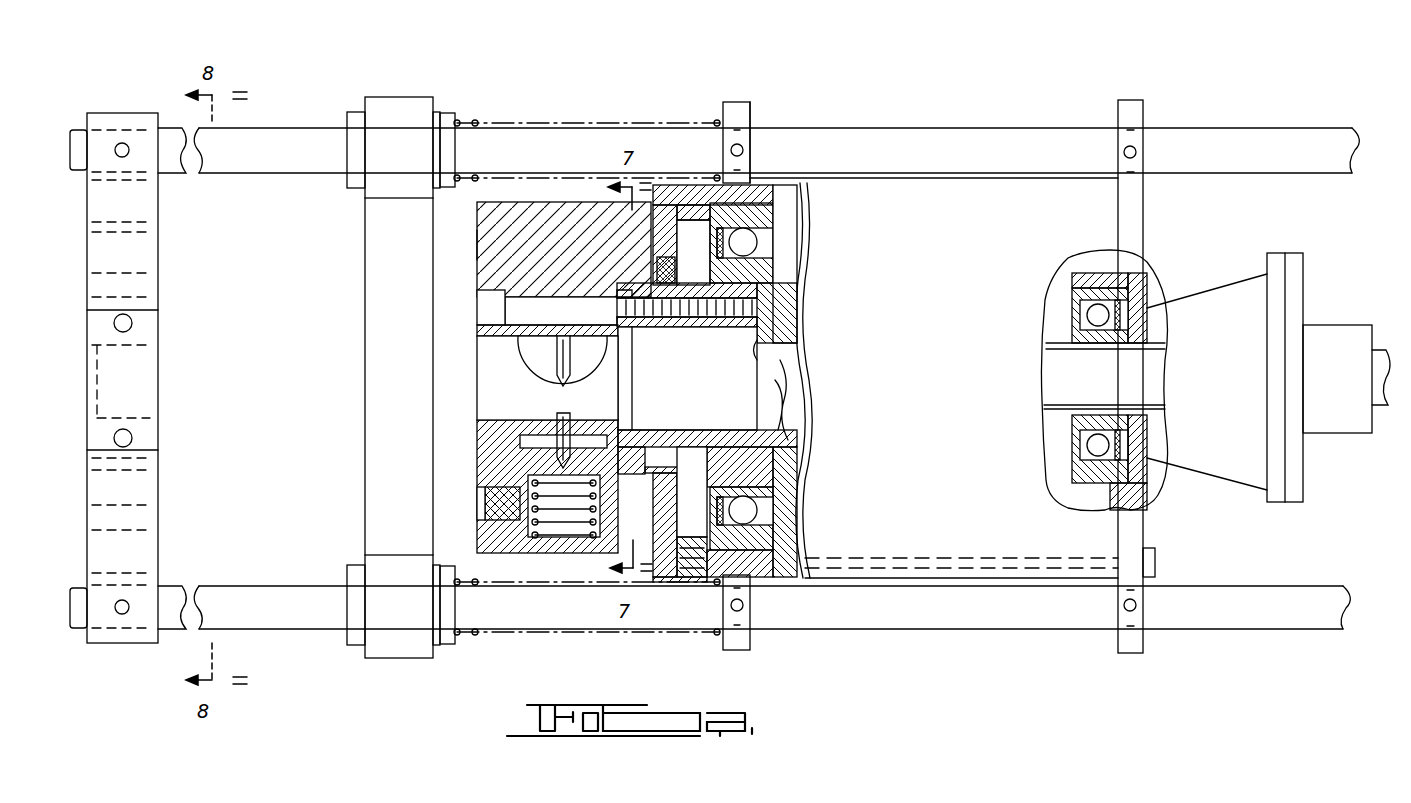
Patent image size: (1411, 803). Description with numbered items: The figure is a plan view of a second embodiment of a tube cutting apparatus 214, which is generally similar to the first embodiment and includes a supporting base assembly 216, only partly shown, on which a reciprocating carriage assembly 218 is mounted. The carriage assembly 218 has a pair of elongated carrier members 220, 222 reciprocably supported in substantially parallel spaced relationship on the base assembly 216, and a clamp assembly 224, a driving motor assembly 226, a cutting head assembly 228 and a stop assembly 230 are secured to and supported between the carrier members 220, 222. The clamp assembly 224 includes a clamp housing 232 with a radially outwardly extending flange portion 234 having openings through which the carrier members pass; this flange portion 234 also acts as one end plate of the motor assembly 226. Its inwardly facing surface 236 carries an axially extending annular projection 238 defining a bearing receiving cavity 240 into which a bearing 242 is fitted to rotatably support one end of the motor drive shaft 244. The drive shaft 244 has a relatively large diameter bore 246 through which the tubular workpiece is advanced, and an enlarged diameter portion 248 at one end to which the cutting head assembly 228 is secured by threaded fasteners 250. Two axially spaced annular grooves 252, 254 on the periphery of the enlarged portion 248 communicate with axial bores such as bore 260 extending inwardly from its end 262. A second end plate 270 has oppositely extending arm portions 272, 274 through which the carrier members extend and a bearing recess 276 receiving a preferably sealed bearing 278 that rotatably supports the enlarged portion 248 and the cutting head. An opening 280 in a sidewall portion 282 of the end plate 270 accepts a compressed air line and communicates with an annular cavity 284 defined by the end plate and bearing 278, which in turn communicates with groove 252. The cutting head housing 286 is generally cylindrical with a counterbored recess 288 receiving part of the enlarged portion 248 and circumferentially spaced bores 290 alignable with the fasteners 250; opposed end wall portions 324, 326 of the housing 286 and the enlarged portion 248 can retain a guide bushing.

The tube cutting apparatus 214 is at (1035, 92).
The supporting base assembly 216 is at (405, 97).
The reciprocating carriage assembly 218 is at (680, 120).
The carrier member 220 is at (912, 135).
The carrier member 222 is at (950, 620).
The clamp assembly 224 is at (1305, 285).
The driving motor assembly 226 is at (878, 279).
The cutting head assembly 228 is at (540, 202).
The stop assembly 230 is at (165, 246).
The clamp housing 232 is at (1198, 297).
The flange portion 234 is at (1146, 212).
The inwardly facing surface 236 is at (1106, 500).
The annular projection 238 is at (1078, 480).
The bearing receiving cavity 240 is at (1086, 292).
The bearing 242 is at (1082, 318).
The motor drive shaft 244 is at (1070, 440).
The bore 246 is at (1056, 356).
The enlarged diameter portion 248 is at (800, 500).
The threaded fastener 250 is at (480, 318).
The annular groove 252 is at (698, 318).
The annular groove 254 is at (632, 328).
The bore 260 is at (680, 450).
The end 262 is at (625, 432).
The second end plate 270 is at (744, 102).
The arm portion 272 is at (752, 126).
The arm portion 274 is at (752, 640).
The bearing recess 276 is at (750, 218).
The bearing 278 is at (760, 228).
The opening 280 is at (692, 580).
The sidewall portion 282 is at (660, 582).
The annular cavity 284 is at (692, 502).
The housing 286 is at (482, 242).
The counterbored recess 288 is at (618, 293).
The bore 290 is at (522, 305).
The end wall portion 324 is at (687, 378).
The end wall portion 326 is at (732, 364).